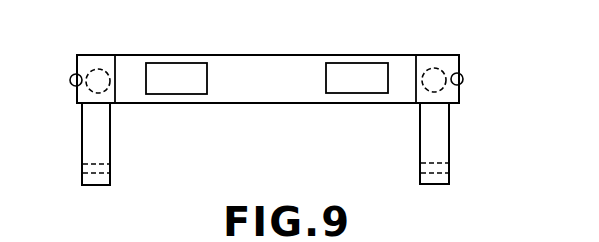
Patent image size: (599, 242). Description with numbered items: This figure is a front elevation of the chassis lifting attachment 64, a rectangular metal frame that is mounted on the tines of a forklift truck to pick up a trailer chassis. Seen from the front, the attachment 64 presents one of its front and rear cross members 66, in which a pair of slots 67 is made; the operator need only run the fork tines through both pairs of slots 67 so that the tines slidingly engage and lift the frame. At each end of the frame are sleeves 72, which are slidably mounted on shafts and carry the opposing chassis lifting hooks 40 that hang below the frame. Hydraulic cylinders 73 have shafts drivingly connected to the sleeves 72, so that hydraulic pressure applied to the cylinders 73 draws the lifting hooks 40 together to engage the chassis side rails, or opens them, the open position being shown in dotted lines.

The chassis lifting attachment 64 is at (307, 43).
The cross member 66 is at (283, 42).
The slot 67 is at (208, 42).
The sleeve 72 is at (453, 54).
The hydraulic cylinder 73 is at (71, 78).
The lifting hook 40 is at (81, 171).